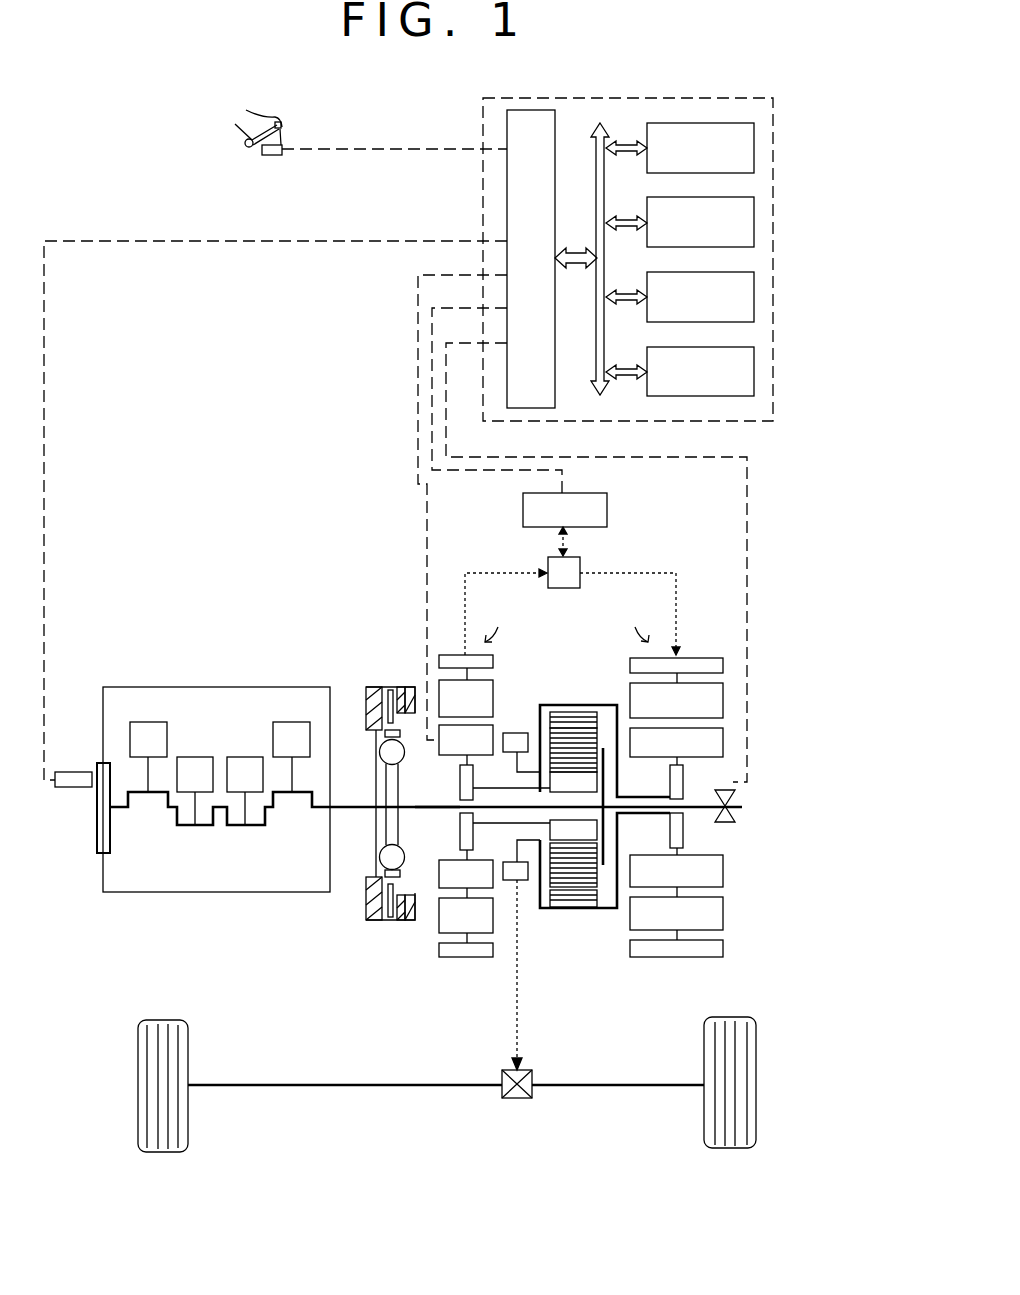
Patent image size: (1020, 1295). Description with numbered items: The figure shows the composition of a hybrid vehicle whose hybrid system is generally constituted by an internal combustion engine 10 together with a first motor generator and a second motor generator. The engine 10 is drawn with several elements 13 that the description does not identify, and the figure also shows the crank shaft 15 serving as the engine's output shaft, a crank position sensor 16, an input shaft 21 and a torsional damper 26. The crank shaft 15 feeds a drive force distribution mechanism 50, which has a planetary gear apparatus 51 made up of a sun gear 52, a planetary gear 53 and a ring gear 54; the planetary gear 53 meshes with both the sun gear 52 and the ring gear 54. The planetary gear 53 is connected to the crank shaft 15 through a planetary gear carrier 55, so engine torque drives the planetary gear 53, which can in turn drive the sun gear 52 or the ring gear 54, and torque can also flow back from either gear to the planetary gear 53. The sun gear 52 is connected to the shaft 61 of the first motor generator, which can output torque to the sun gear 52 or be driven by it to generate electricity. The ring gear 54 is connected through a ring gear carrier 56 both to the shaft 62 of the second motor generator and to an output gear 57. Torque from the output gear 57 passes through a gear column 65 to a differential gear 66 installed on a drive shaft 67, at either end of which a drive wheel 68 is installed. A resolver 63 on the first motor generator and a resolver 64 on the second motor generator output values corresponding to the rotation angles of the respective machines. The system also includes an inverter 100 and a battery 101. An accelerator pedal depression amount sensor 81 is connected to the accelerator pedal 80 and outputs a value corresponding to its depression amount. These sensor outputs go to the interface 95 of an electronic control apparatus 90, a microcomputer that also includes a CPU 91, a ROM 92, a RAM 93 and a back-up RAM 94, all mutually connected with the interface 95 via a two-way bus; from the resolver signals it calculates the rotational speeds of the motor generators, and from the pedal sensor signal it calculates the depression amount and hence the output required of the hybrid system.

The internal combustion engine 10 is at (153, 670).
The cylinders 13 is at (285, 732).
The crank shaft 15 is at (338, 810).
The crank position sensor 16 is at (70, 777).
The input shaft 21 is at (427, 810).
The torsional damper 26 is at (389, 672).
The drive force distribution mechanism 50 is at (601, 783).
The planetary gear apparatus 51 is at (583, 690).
The sun gear 52 is at (587, 784).
The planetary gear 53 is at (568, 742).
The ring gear 54 is at (578, 900).
The planetary gear carrier 55 is at (603, 747).
The ring gear carrier 56 is at (608, 910).
The output gear 57 is at (522, 878).
The shaft of the first motor generator 61 is at (532, 788).
The shaft of the second motor generator 62 is at (643, 813).
The resolver 63 is at (460, 790).
The resolver 64 is at (683, 776).
The gear column 65 is at (520, 1002).
The differential gear 66 is at (513, 1100).
The drive shaft 67 is at (345, 1090).
The drive wheel 68 is at (138, 1115).
The accelerator pedal 80 is at (298, 116).
The accelerator pedal depression amount sensor 81 is at (273, 157).
The electronic control apparatus 90 is at (645, 421).
The microprocessor (CPU) 91 is at (754, 148).
The read-only memory (ROM) 92 is at (754, 223).
The random access memory (RAM) 93 is at (754, 297).
The back-up RAM 94 is at (754, 372).
The interface 95 is at (555, 398).
The inverter 100 is at (567, 568).
The battery 101 is at (590, 512).